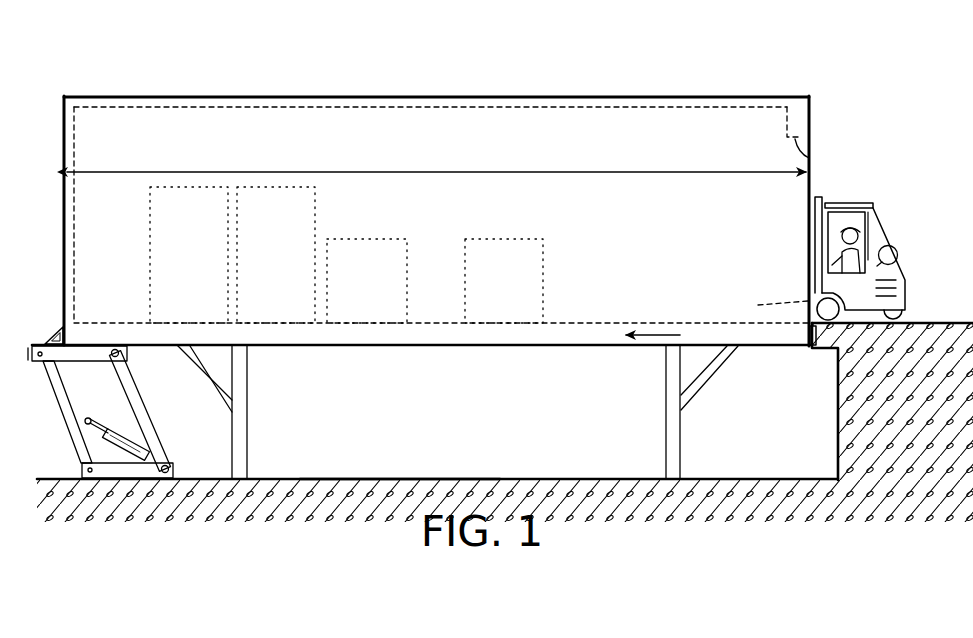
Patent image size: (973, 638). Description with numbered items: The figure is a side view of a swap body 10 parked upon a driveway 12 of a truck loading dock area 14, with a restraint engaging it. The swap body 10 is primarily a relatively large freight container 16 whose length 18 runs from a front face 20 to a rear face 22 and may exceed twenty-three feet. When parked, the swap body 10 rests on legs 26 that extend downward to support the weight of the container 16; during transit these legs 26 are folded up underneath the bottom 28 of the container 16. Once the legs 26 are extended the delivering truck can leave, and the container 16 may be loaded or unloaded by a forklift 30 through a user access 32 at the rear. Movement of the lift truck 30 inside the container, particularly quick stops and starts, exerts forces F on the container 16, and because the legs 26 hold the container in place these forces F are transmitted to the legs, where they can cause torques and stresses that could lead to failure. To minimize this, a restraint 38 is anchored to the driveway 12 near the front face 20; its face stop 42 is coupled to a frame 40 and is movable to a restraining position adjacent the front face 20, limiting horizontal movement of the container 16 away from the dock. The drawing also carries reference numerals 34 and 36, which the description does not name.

The swap body 10 is at (529, 78).
The driveway 12 is at (380, 479).
The truck loading dock area 14 is at (470, 479).
The freight container 16 is at (320, 96).
The length 18 is at (660, 177).
The front face 20 is at (64, 135).
The rear face 22 is at (810, 122).
The legs 26 is at (247, 438).
The bottom 28 is at (477, 347).
The forklift 30 is at (848, 203).
The user access 32 is at (810, 158).
The cargo pallet 34 is at (512, 238).
The rear bracket 36 is at (806, 333).
The restraint 38 is at (126, 412).
The frame 40 is at (152, 423).
The face stop 42 is at (64, 338).
The forces F is at (657, 335).